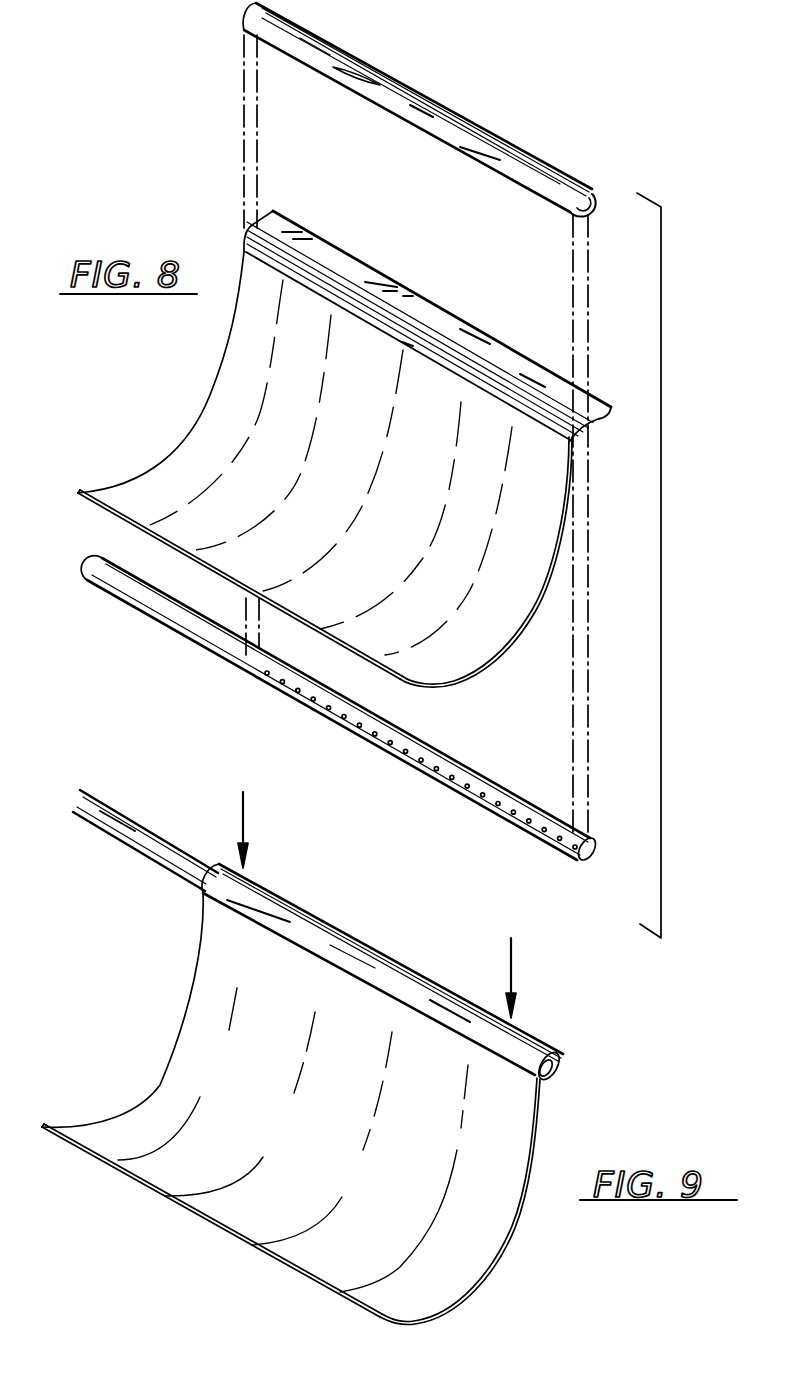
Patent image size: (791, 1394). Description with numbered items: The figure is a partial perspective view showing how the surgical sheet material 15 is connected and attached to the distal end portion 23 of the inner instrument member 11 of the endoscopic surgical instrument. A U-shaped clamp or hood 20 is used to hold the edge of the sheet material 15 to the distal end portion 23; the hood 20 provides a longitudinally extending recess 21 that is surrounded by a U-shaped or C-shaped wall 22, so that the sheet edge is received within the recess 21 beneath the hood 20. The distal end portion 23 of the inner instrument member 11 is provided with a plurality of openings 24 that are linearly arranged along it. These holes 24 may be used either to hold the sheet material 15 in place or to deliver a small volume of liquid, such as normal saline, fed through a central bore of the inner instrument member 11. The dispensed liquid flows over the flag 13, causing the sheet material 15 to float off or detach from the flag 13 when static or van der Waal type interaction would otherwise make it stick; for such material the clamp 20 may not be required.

In FIG. 8, the inner instrument member 11 is at (338, 730).
In FIG. 9, the inner instrument member 11 is at (135, 817).
In FIG. 9, the flag 13 is at (538, 1123).
In FIG. 8, the surgical sheet material 15 is at (233, 380).
In FIG. 9, the surgical sheet material 15 is at (325, 1109).
In FIG. 8, the U-shaped hood 20 is at (443, 108).
In FIG. 9, the U-shaped hood 20 is at (388, 982).
In FIG. 8, the longitudinally extending recess 21 is at (595, 210).
In FIG. 8, the U-shaped or C-shaped wall 22 is at (250, 12).
In FIG. 8, the distal end portion 23 is at (457, 762).
In FIG. 8, the openings 24 is at (517, 822).